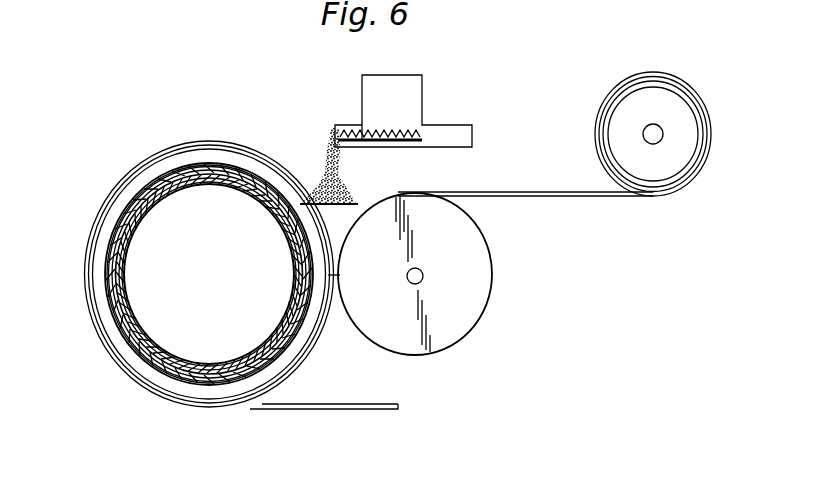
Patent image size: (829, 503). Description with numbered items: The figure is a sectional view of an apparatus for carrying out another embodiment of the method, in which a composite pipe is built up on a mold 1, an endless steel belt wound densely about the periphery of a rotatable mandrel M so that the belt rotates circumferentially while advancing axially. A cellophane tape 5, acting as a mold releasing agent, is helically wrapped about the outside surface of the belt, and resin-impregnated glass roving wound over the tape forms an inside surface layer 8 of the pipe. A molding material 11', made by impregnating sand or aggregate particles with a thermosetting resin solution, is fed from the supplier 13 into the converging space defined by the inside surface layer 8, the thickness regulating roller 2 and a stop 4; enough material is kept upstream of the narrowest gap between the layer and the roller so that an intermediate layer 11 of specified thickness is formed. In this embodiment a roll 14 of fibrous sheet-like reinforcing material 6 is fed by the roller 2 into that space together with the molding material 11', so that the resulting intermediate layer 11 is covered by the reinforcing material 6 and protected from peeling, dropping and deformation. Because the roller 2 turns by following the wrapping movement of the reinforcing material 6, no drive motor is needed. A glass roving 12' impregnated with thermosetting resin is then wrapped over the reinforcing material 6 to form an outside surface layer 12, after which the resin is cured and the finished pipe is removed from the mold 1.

The mold 1 is at (112, 283).
The mandrel M is at (123, 266).
The thickness regulating roller 2 is at (462, 332).
The stop 4 is at (357, 201).
The cellophane tape 5 is at (120, 230).
The fibrous sheet-like reinforcing material 6 is at (95, 248).
The inside surface layer 8 is at (135, 197).
The intermediate layer 11 is at (237, 245).
The molding material 11' is at (315, 150).
The outside surface layer 12 is at (209, 249).
The glass roving 12' is at (326, 433).
The supplier 13 is at (413, 88).
The roll 14 is at (608, 100).